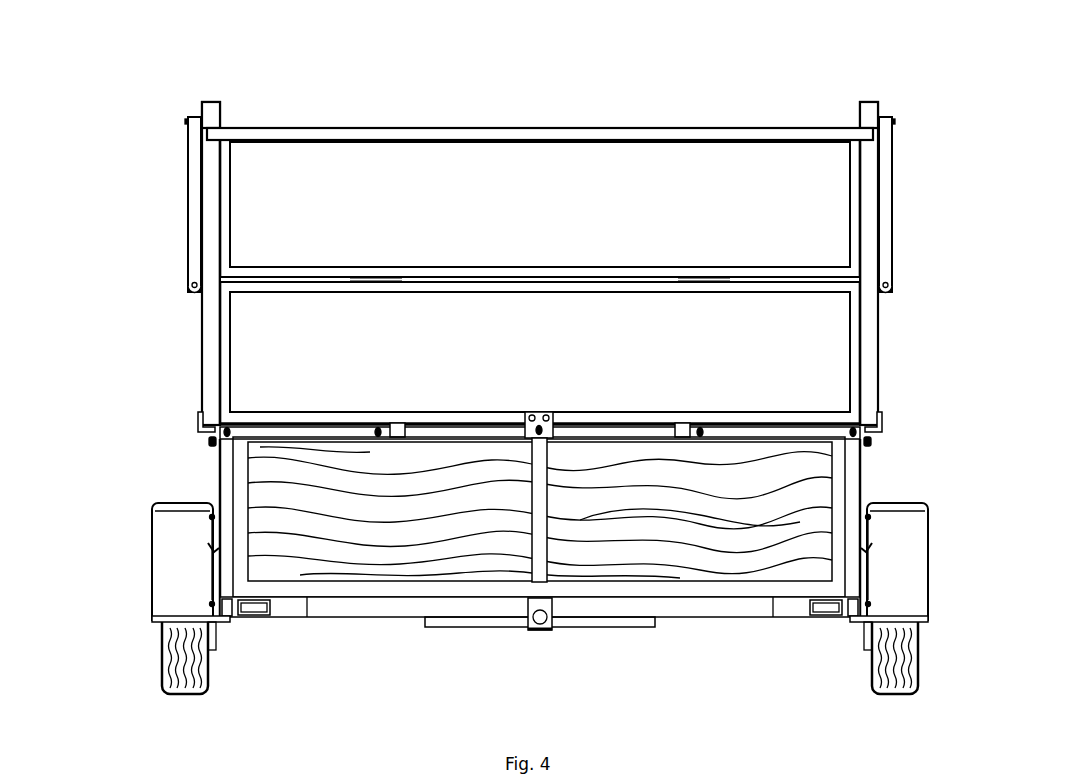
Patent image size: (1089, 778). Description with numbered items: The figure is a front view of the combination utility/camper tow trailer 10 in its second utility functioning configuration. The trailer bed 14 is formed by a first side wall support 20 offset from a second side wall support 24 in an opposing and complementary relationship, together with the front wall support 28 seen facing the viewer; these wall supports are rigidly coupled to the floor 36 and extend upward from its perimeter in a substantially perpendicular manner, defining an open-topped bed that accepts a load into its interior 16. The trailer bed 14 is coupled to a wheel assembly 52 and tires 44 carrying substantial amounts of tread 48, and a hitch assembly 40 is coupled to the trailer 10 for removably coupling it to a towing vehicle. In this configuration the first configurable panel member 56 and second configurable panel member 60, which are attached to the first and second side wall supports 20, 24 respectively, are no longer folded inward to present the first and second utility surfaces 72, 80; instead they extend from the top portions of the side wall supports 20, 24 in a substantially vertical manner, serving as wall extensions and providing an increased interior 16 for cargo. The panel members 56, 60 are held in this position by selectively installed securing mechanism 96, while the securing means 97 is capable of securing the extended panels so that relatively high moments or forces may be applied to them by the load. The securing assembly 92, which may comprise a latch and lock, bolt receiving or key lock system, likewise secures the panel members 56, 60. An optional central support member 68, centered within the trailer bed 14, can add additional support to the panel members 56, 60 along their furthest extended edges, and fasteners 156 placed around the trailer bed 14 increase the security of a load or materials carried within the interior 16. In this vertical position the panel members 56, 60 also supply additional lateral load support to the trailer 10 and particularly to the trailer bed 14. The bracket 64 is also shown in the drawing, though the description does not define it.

The utility/camper trailer 10 is at (946, 362).
The trailer bed 14 is at (213, 495).
The interior 16 is at (398, 506).
The first side wall support 20 is at (225, 472).
The second side wall support 24 is at (857, 483).
The front wall support 28 is at (378, 562).
The floor 36 is at (327, 613).
The hitch assembly 40 is at (556, 634).
The tires 44 is at (165, 642).
The tread 48 is at (915, 666).
The wheel assembly 52 is at (146, 585).
The first configurable panel member 56 is at (210, 358).
The second configurable panel member 60 is at (873, 355).
The mounting bracket 64 is at (200, 425).
The central support member 68 is at (885, 195).
The first utility surface 72 is at (218, 118).
The second utility surface 80 is at (862, 120).
The securing assembly 92 is at (535, 412).
The securing mechanism 96 is at (212, 440).
The securing means 97 is at (303, 153).
The fastener 156 is at (210, 642).